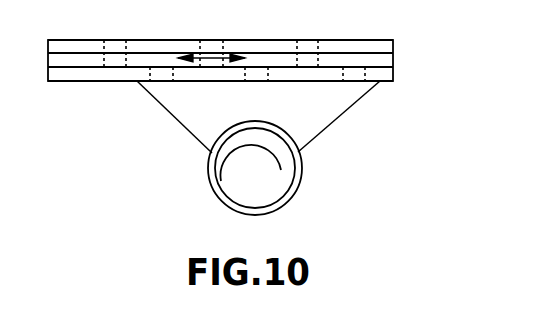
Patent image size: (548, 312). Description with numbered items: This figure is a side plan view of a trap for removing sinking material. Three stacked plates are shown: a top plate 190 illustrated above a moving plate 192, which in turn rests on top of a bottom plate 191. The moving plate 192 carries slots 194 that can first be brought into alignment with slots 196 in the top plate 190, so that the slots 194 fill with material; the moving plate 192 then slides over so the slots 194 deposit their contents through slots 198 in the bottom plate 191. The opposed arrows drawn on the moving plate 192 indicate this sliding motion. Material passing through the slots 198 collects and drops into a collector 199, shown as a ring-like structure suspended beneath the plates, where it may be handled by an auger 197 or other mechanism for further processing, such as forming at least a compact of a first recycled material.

The top plate 190 is at (393, 40).
The bottom plate 191 is at (393, 71).
The moving plate 192 is at (222, 62).
The slots 194 is at (322, 61).
The slots 196 is at (308, 40).
The auger 197 is at (283, 186).
The slots 198 is at (360, 80).
The collector 199 is at (317, 119).